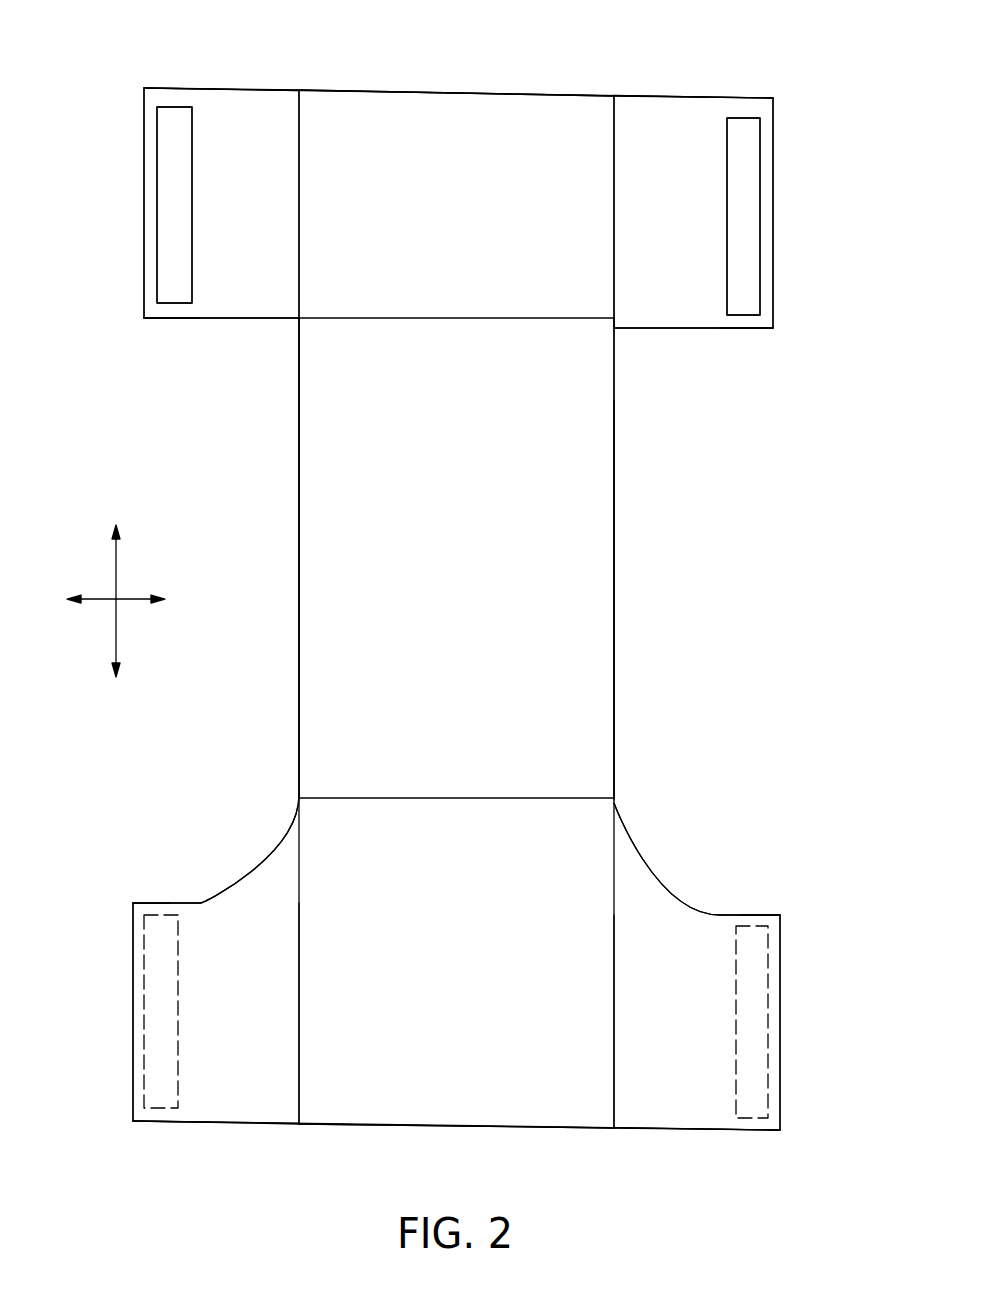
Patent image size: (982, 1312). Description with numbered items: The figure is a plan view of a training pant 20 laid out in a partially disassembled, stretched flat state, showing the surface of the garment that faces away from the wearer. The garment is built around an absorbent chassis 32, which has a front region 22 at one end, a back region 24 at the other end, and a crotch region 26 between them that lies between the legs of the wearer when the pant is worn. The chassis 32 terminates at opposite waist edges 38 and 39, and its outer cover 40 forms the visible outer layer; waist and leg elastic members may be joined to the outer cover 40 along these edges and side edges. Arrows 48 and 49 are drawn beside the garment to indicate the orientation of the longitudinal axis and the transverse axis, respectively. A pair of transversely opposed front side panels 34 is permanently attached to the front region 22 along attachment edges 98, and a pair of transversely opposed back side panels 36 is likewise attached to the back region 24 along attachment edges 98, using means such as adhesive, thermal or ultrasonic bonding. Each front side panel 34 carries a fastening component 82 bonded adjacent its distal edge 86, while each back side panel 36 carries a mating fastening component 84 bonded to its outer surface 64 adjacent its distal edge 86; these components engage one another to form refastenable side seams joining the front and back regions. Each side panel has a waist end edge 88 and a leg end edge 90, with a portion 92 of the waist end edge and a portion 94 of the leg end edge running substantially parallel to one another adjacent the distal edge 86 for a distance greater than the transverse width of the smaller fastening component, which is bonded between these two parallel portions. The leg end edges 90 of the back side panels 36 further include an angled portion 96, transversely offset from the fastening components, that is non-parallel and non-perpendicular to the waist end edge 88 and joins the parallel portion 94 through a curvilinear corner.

The training pant 20 is at (233, 78).
The front region 22 is at (451, 88).
The back region 24 is at (350, 947).
The crotch region 26 is at (568, 577).
The absorbent chassis 32 is at (517, 760).
The front side panels 34 is at (258, 182).
The back side panels 36 is at (282, 868).
The waist edge 38 is at (363, 91).
The waist edge 39 is at (345, 1126).
The outer cover 40 is at (360, 370).
The arrow depicting longitudinal axis 48 is at (113, 568).
The arrow depicting transverse axis 49 is at (93, 602).
The outer surface 64 is at (455, 709).
The fastening component 82 is at (172, 178).
The mating fastening component 84 is at (160, 983).
The distal edge 86 is at (145, 245).
The waist end edge 88 is at (272, 88).
The leg end edge 90 is at (240, 318).
The parallel portion of waist end edge 92 is at (172, 88).
The parallel portion of leg end edge 94 is at (178, 318).
The angled portion 96 is at (283, 835).
The attachment edges 98 is at (299, 238).